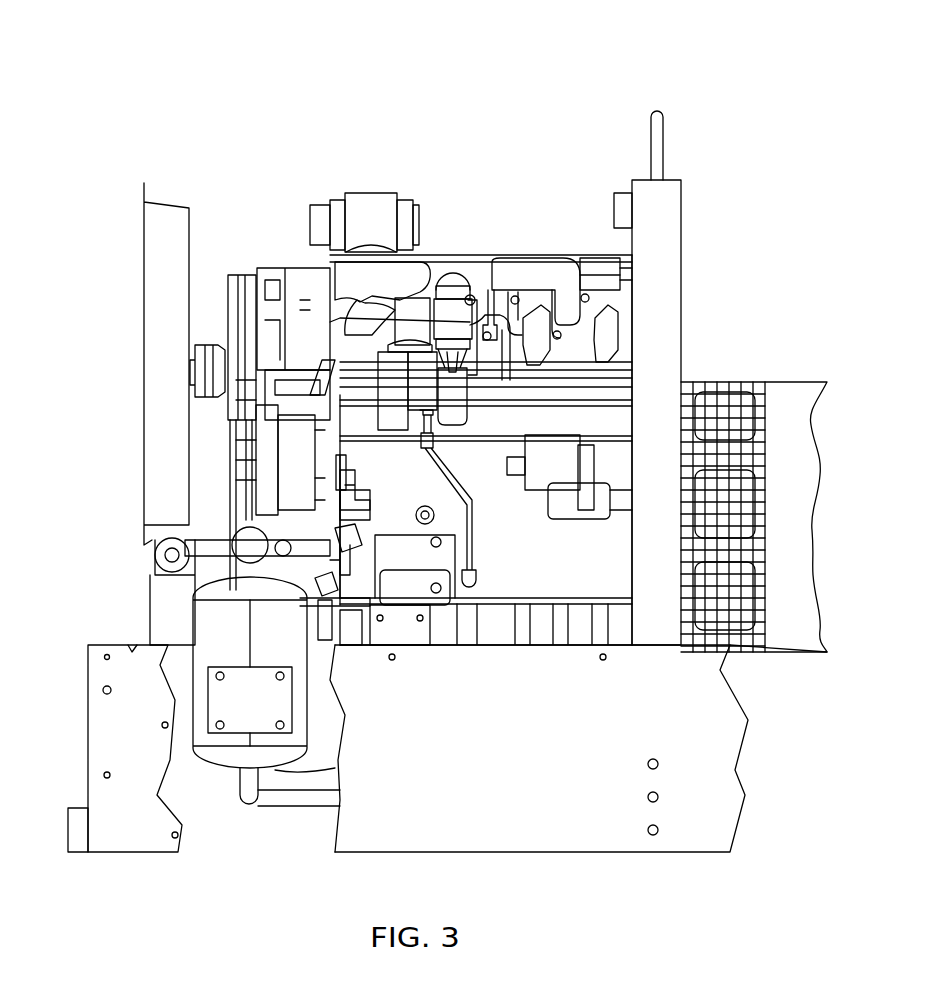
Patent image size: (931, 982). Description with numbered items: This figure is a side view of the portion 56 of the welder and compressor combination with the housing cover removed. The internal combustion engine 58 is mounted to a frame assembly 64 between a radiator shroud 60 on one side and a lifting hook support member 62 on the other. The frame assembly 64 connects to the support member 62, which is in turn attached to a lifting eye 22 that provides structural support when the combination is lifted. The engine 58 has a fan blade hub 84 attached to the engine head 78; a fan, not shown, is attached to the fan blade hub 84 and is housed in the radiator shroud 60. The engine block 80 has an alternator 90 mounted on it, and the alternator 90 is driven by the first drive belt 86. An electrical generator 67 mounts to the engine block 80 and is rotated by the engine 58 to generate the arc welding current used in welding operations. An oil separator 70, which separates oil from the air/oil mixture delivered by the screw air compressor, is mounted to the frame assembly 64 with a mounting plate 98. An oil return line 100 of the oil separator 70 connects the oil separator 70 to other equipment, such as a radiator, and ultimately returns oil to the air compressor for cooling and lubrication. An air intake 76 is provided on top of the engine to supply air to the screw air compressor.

The lifting eye 22 is at (650, 128).
The portion 56 is at (182, 100).
The internal combustion engine 58 is at (497, 214).
The radiator shroud 60 is at (173, 247).
The lifting hook support member 62 is at (668, 220).
The frame assembly 64 is at (538, 725).
The electrical generator 67 is at (798, 520).
The oil separator 70 is at (230, 627).
The air intake 76 is at (378, 223).
The engine head 78 is at (580, 349).
The engine block 80 is at (570, 563).
The fan blade hub 84 is at (206, 343).
The first drive belt 86 is at (232, 425).
The alternator 90 is at (308, 487).
The mounting plate 98 is at (263, 703).
The oil return line 100 is at (250, 788).